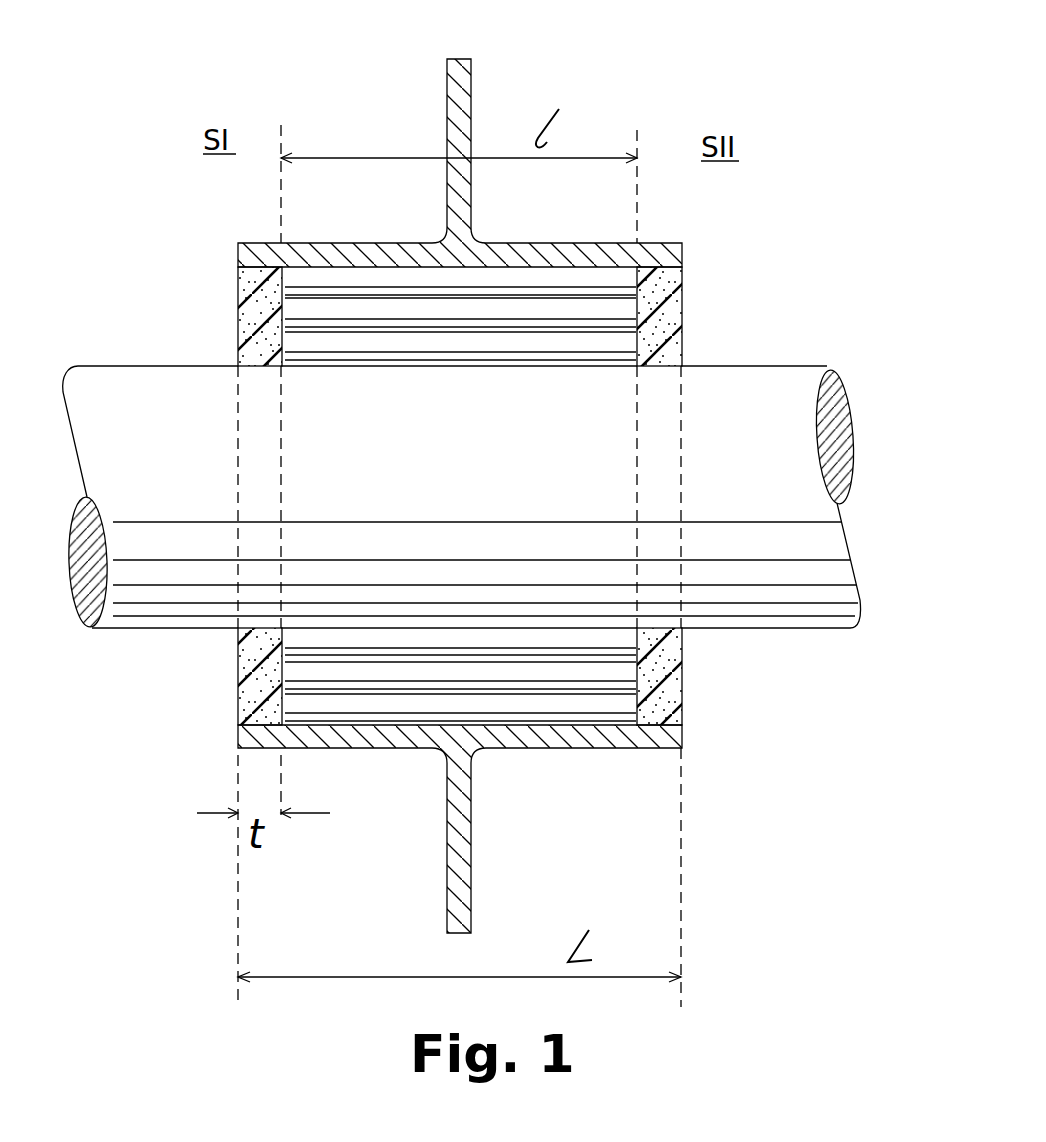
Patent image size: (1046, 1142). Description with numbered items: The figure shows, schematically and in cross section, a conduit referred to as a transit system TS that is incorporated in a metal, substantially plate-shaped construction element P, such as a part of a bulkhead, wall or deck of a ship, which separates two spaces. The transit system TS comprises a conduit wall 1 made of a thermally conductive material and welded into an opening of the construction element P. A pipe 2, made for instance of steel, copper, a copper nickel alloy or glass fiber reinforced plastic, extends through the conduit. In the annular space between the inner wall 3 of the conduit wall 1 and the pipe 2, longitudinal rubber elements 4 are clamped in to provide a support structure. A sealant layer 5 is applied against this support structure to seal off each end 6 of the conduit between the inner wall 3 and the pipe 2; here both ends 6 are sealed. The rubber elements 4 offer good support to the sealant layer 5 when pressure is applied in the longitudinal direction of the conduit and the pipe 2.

The conduit wall 1 is at (601, 262).
The pipe 2 is at (800, 378).
The inner wall 3 is at (402, 267).
The rubber element 4 is at (497, 313).
The sealant layer 5 is at (660, 307).
The end of the conduit 6 is at (682, 725).
The plate-shaped construction element P is at (462, 122).
The transit system TS is at (648, 110).